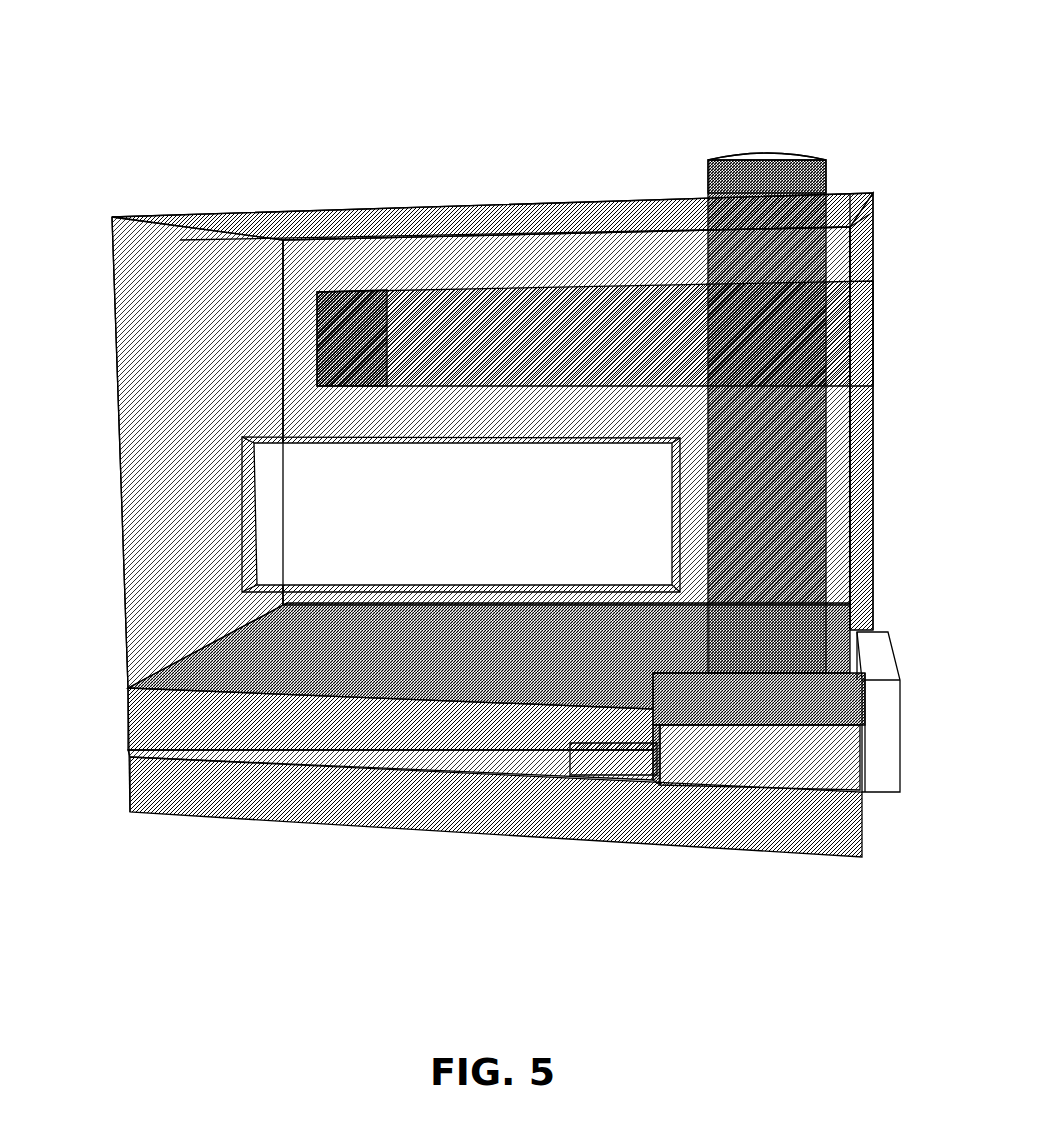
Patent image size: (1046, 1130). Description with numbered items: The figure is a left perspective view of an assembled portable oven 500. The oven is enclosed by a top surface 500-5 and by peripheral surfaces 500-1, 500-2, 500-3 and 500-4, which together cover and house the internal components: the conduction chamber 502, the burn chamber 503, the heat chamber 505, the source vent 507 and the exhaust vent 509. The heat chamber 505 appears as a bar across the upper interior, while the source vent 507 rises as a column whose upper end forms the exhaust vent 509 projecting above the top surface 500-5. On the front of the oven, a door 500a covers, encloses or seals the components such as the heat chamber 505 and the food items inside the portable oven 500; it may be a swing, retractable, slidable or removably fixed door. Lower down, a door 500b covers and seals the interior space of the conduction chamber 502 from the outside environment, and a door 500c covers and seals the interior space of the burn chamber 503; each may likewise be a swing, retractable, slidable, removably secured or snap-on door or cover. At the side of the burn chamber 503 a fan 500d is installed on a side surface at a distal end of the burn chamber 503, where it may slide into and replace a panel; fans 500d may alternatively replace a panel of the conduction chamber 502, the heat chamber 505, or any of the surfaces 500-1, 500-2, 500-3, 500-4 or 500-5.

The portable oven 500 is at (797, 70).
The peripheral surface 500-1 is at (134, 554).
The peripheral surface 500-2 is at (136, 286).
The peripheral surface 500-3 is at (856, 441).
The peripheral surface 500-4 is at (358, 250).
The top surface 500-5 is at (522, 200).
The door 500a is at (338, 464).
The door 500b is at (613, 757).
The door 500c is at (743, 770).
The fan 500d is at (886, 708).
The conduction chamber 502 is at (160, 716).
The burn chamber 503 is at (664, 694).
The heat chamber 505 is at (584, 297).
The source vent 507 is at (710, 190).
The exhaust vent 509 is at (830, 172).